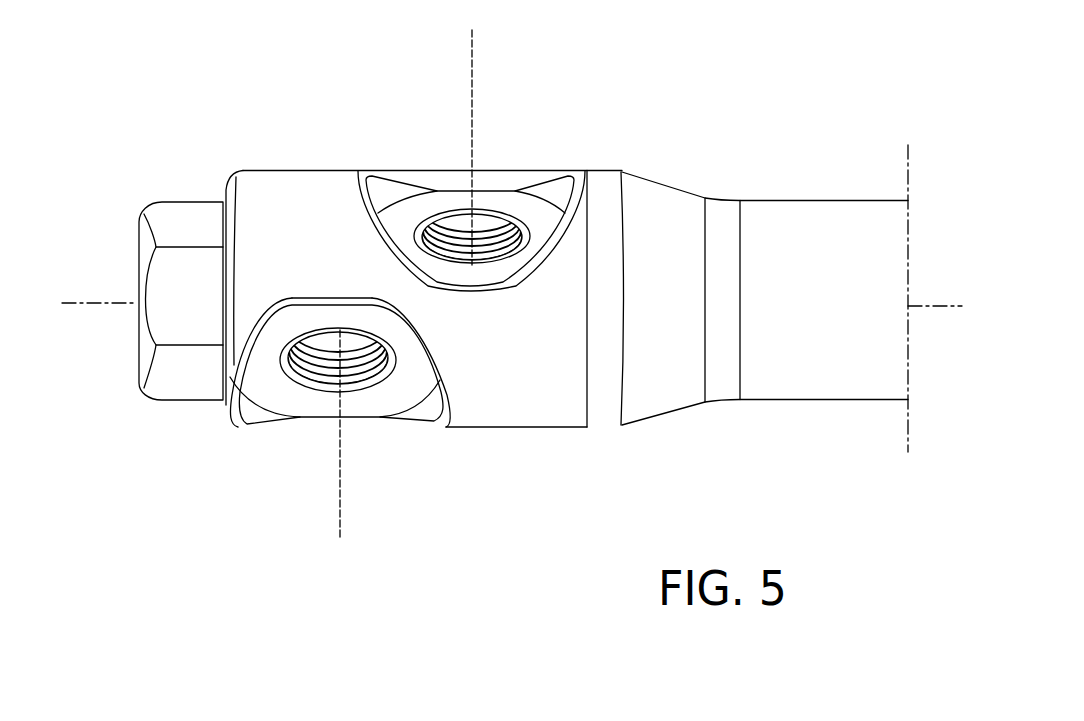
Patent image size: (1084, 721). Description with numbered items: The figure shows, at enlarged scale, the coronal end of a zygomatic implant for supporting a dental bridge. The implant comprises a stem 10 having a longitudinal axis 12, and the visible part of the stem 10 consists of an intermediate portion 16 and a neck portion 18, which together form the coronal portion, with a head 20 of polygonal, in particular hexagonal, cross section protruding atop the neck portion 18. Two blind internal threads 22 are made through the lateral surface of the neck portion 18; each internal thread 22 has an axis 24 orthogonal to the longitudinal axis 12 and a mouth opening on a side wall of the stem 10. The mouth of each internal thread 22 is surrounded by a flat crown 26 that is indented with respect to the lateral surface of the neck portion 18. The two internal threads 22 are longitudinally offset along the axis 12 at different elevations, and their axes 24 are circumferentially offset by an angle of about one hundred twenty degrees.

The stem 10 is at (765, 197).
The longitudinal axis 12 is at (102, 304).
The intermediate portion 16 is at (783, 365).
The neck portion 18 is at (513, 393).
The head 20 is at (189, 217).
The internal thread 22 is at (493, 240).
The axis 24 is at (470, 97).
The flat crown 26 is at (413, 215).